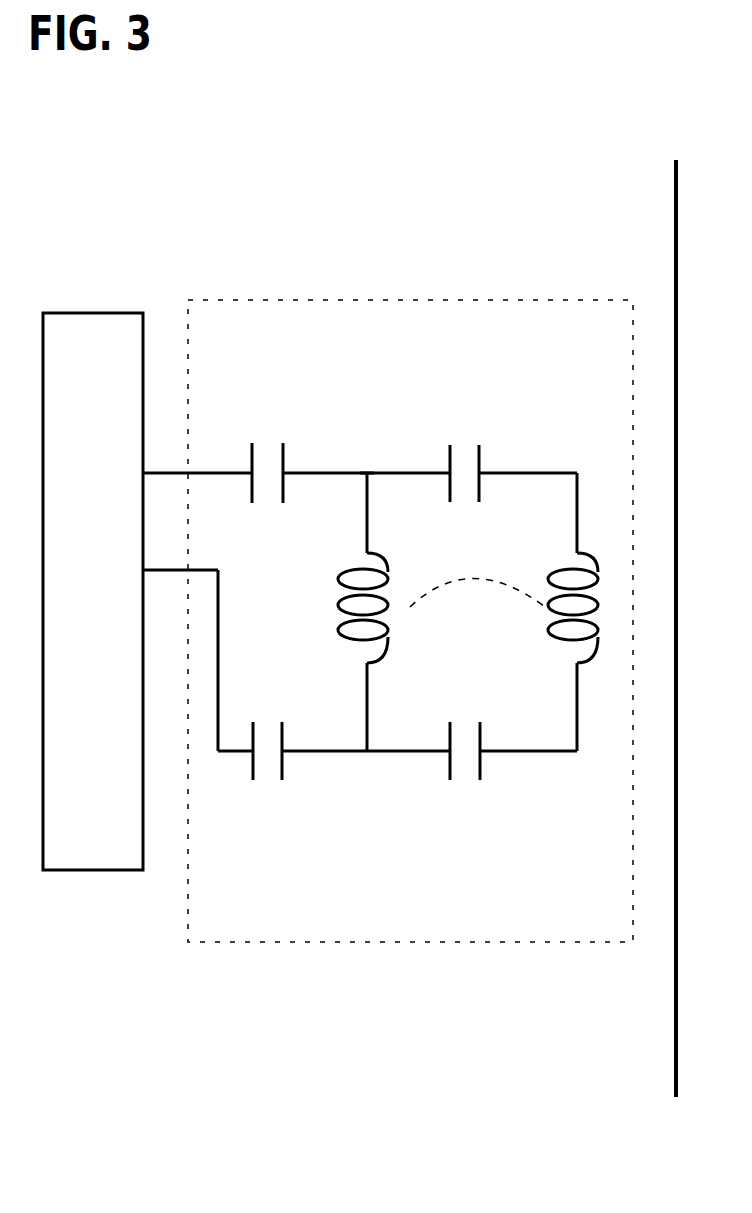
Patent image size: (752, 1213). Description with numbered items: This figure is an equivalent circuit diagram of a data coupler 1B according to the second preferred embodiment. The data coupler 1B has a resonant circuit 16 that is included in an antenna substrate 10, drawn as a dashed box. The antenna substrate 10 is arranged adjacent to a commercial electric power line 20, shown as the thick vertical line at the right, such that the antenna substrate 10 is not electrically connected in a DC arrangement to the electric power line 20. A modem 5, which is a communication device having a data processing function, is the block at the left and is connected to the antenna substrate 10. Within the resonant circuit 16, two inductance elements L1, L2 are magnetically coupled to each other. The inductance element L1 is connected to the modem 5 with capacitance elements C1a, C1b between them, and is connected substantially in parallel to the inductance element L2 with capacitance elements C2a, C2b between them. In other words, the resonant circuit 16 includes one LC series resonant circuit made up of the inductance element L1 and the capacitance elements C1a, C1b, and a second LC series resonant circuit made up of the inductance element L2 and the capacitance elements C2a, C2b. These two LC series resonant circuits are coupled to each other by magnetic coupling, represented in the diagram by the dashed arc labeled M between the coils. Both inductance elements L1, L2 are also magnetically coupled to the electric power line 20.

The data coupler 1B is at (252, 181).
The modem 5 is at (70, 312).
The antenna substrate 10 is at (398, 300).
The resonant circuit 16 is at (370, 437).
The commercial electric power line 20 is at (675, 208).
The capacitance element C1a is at (266, 443).
The capacitance element C2a is at (463, 443).
The capacitance element C1b is at (266, 724).
The capacitance element C2b is at (464, 724).
The inductance element L1 is at (340, 608).
The inductance element L2 is at (551, 608).
The magnetic coupling M is at (477, 567).